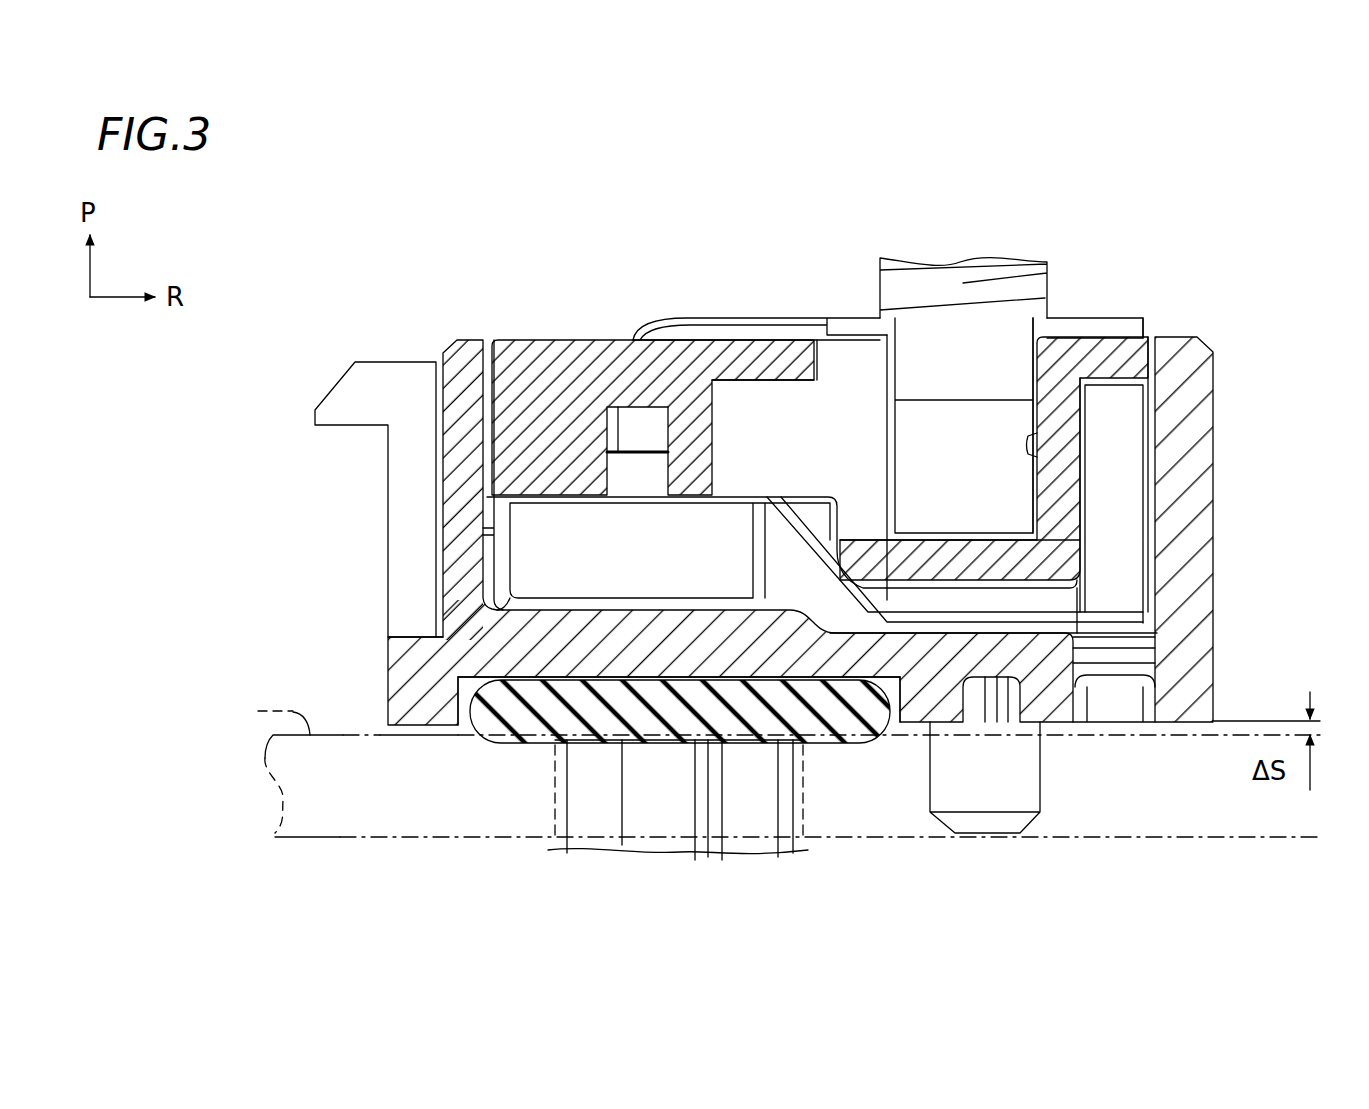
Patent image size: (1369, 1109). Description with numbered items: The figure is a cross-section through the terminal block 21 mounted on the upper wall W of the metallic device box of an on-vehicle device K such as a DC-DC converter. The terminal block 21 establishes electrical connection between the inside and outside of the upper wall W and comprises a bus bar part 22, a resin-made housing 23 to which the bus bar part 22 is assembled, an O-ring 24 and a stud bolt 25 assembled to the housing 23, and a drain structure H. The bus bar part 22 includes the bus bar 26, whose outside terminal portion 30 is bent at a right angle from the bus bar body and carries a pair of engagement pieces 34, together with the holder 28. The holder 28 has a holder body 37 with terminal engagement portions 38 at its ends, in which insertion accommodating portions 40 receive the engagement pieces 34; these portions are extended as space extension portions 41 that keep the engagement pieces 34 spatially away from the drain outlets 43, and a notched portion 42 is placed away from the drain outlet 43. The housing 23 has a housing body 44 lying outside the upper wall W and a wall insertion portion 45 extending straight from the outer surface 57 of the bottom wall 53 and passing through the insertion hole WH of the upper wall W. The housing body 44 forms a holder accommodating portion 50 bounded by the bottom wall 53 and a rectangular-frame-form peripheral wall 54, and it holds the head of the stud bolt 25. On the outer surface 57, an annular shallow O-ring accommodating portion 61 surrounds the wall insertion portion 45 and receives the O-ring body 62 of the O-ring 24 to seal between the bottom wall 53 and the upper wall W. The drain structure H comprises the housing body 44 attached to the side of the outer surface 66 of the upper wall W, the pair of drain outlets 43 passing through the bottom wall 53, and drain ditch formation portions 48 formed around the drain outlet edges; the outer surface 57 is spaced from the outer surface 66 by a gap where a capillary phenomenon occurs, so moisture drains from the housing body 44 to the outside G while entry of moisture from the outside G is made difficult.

The terminal block 21 is at (1226, 288).
The bus bar part 22 is at (779, 314).
The housing 23 is at (384, 500).
The O-ring 24 is at (514, 714).
The stud bolt 25 is at (915, 262).
The bus bar 26 is at (1091, 317).
The holder 28 is at (587, 336).
The outside terminal portion 30 is at (1125, 318).
The engagement pieces 34 is at (980, 431).
The holder body 37 is at (522, 355).
The terminal engagement portions 38 is at (773, 363).
The insertion accommodating portions 40 is at (850, 365).
The space extension portions 41 is at (1036, 553).
The notched portion 42 is at (850, 517).
The drain outlets 43 is at (1117, 703).
The housing body 44 is at (460, 565).
The wall insertion portion 45 is at (752, 843).
The drain ditch formation portions 48 is at (1165, 734).
The holder accommodating portion 50 is at (497, 400).
The bottom wall 53 is at (1063, 710).
The peripheral wall 54 is at (1198, 395).
The outer surface 57 is at (1190, 724).
The O-ring accommodating portion 61 is at (462, 689).
The O-ring body 62 is at (478, 742).
The outer surface 66 is at (258, 711).
The on-vehicle device K is at (299, 254).
The outside G is at (335, 708).
The drain structure H is at (1232, 707).
The upper wall W is at (325, 822).
The insertion hole WH is at (562, 810).